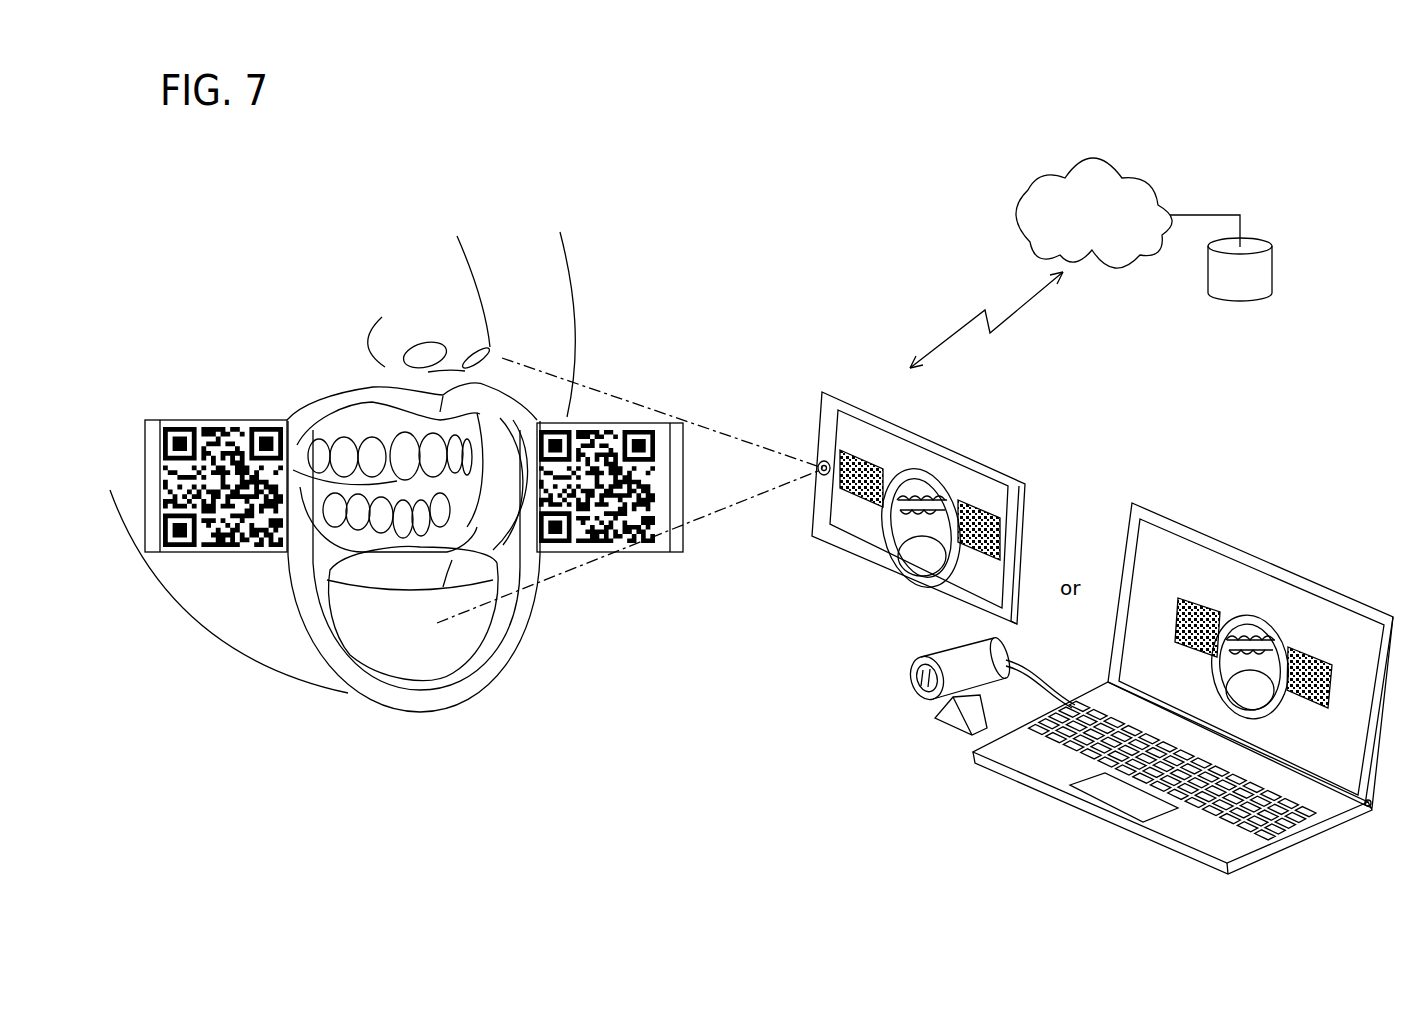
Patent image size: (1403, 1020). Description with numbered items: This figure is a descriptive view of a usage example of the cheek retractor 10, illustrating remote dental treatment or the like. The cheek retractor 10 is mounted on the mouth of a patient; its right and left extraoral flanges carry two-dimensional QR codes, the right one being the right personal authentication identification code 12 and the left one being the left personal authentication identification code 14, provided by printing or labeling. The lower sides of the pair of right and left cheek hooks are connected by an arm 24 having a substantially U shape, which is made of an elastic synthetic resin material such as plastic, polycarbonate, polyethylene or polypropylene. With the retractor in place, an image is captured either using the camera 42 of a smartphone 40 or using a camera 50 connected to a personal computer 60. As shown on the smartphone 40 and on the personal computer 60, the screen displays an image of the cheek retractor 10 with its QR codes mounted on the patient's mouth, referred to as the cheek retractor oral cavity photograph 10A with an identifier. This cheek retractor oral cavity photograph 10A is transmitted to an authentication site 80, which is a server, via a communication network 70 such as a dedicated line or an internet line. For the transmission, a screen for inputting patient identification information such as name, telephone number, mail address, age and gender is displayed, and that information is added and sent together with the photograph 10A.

The cheek retractor 10 is at (424, 522).
The right personal authentication identification code 12 is at (178, 425).
The left personal authentication identification code 14 is at (612, 430).
The arm 24 is at (422, 715).
The smartphone 40 is at (906, 498).
The camera 42 is at (822, 462).
The cheek retractor oral cavity photograph with an identifier 10A is at (865, 533).
The camera 50 is at (940, 650).
The personal computer 60 is at (1310, 578).
The communication network 70 is at (1128, 267).
The authentication site 80 is at (1242, 301).